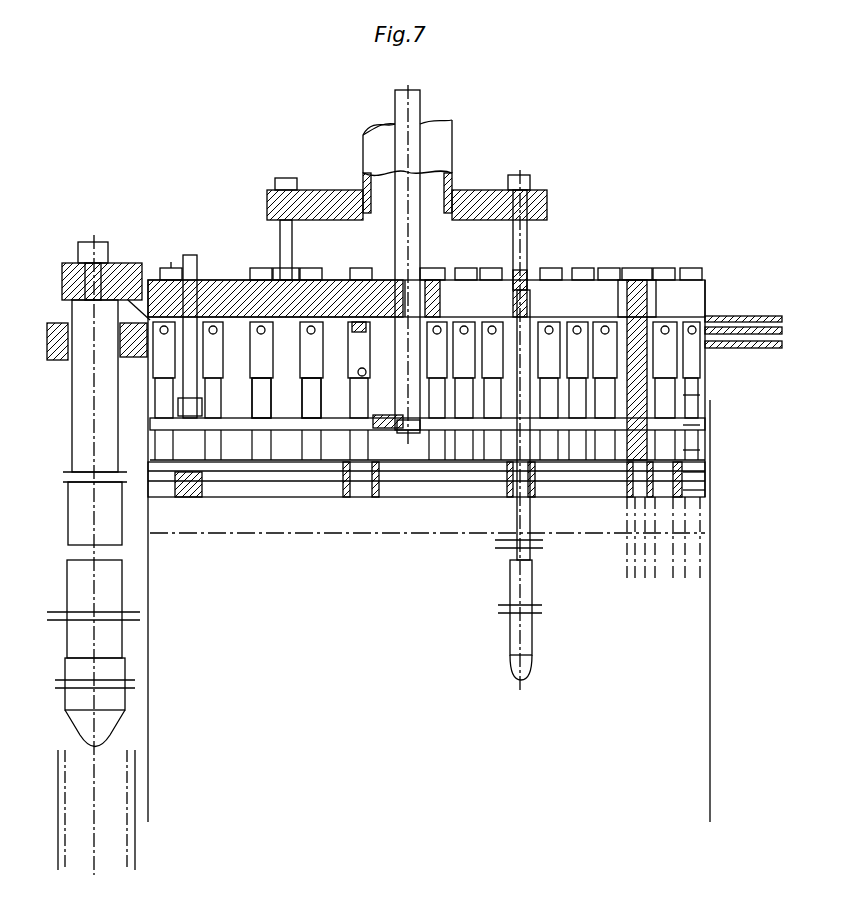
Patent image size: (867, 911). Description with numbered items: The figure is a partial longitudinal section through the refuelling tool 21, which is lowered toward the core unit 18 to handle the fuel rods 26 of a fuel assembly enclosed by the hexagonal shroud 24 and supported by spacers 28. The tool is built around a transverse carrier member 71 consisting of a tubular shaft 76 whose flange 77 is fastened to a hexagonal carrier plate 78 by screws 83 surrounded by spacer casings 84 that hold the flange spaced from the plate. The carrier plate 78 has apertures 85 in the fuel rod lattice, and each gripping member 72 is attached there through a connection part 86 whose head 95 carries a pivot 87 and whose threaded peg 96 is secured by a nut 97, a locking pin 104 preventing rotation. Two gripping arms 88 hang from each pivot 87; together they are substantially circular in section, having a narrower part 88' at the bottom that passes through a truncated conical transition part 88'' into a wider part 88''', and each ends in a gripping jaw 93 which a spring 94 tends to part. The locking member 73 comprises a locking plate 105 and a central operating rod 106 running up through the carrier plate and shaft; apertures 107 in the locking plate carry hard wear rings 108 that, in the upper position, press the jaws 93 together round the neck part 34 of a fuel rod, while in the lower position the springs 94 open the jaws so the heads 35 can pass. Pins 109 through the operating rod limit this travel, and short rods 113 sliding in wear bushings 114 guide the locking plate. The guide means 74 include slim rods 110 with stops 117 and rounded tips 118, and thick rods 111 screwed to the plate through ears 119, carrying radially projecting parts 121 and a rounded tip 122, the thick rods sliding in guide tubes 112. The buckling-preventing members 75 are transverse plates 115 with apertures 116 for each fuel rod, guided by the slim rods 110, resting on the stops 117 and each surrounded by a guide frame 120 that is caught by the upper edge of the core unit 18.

The core unit 18 is at (688, 672).
The tool 21 is at (283, 238).
The shroud 24 is at (712, 615).
The fuel rods 26 is at (692, 505).
The spacers 28 is at (415, 528).
The neck part 34 is at (700, 490).
The heads 35 is at (700, 473).
The carrier member 71 is at (228, 280).
The gripping members 72 is at (318, 398).
The locking member 73 is at (398, 398).
The guide means 74 is at (112, 598).
The buckling-preventing members 75 is at (300, 478).
The tubular shaft 76 is at (440, 147).
The flange 77 is at (462, 206).
The carrier plate 78 is at (308, 285).
The screws 83 is at (522, 182).
The spacer casings 84 is at (528, 256).
The apertures 85 is at (334, 290).
The connection part 86 is at (372, 290).
The pivot 87 is at (698, 325).
The gripping arms 88 is at (451, 370).
The narrower part 88' is at (719, 455).
The truncated conical transition part 88'' is at (721, 430).
The wider part 88''' is at (724, 405).
The gripping jaw 93 is at (352, 458).
The spring 94 is at (640, 386).
The head 95 is at (650, 316).
The peg 96 is at (656, 300).
The nut 97 is at (638, 272).
The locking pin 104 is at (623, 306).
The locking plate 105 is at (282, 425).
The central operating rod 106 is at (366, 373).
The apertures 107 is at (357, 390).
The wear rings 108 is at (376, 430).
The pins 109 is at (420, 276).
The slim rods 110 is at (532, 590).
The thick rods 111 is at (103, 436).
The guide tubes 112 is at (130, 843).
The short rods 113 is at (189, 275).
The wear bushings 114 is at (176, 275).
The transverse plates 115 is at (448, 480).
The apertures 116 is at (360, 480).
The stops 117 is at (530, 495).
The rounded tips 118 is at (532, 670).
The ears 119 is at (113, 270).
The guide frame 120 is at (133, 348).
The radially projecting parts 121 is at (122, 482).
The rounded tip 122 is at (108, 722).